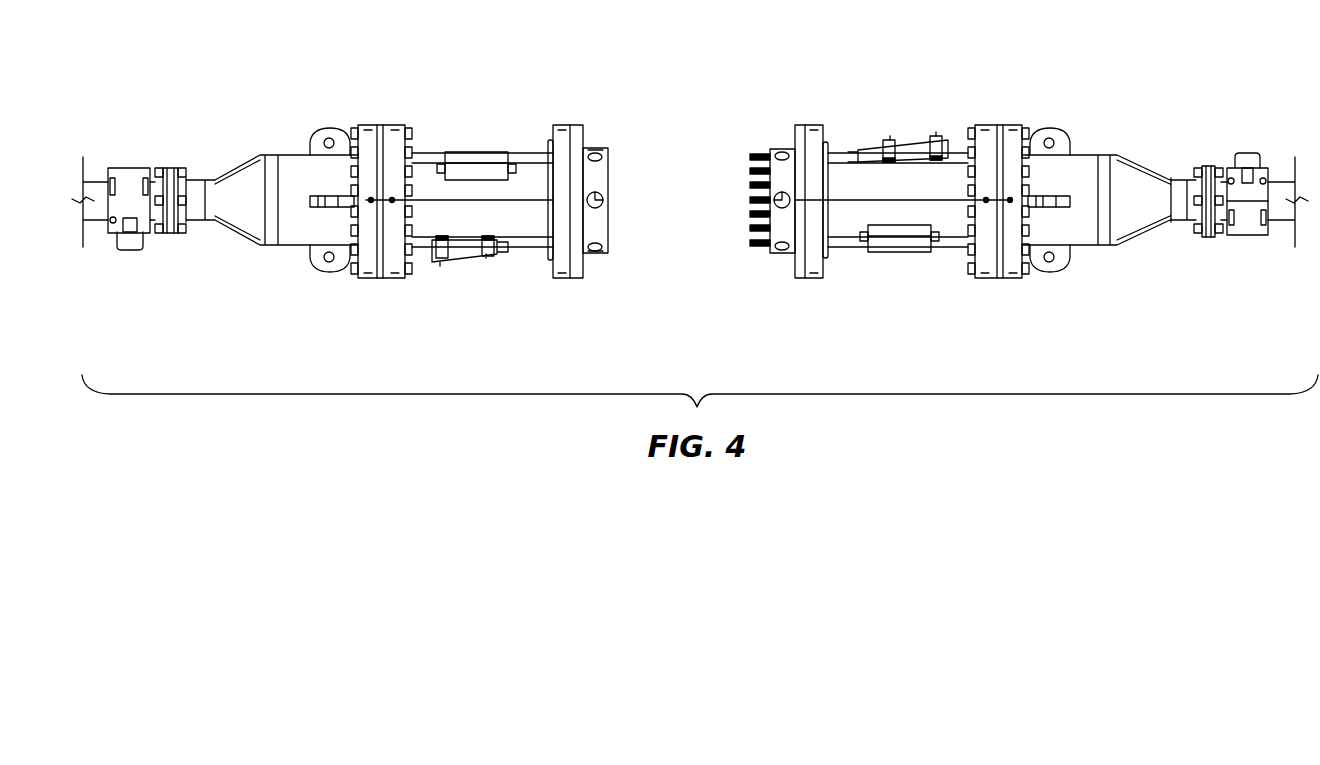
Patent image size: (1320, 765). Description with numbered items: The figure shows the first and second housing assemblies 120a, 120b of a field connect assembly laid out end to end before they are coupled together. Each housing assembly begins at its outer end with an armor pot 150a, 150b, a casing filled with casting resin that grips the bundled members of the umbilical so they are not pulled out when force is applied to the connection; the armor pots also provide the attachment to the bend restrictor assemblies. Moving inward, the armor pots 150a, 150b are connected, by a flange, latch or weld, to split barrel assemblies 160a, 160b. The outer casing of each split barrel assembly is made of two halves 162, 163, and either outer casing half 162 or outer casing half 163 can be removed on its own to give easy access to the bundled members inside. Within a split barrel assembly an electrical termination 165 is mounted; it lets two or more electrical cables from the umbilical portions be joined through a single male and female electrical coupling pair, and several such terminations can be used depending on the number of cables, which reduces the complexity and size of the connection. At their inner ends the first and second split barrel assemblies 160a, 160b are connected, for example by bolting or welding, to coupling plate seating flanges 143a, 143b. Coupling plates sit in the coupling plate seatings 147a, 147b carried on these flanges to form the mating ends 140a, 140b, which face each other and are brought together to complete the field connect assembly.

The first housing assembly 120a is at (392, 84).
The second housing assembly 120b is at (1118, 105).
The first mating end 140a is at (606, 175).
The second mating end 140b is at (766, 150).
The first coupling plate seating flange 143a is at (575, 126).
The second coupling plate seating flange 143b is at (797, 125).
The first coupling plate seating 147a is at (600, 256).
The second coupling plate seating 147b is at (778, 255).
The first armor pot 150a is at (288, 243).
The second armor pot 150b is at (1085, 242).
The first split barrel assembly 160a is at (508, 218).
The second split barrel assembly 160b is at (848, 223).
The outer casing half 162 is at (528, 162).
The outer casing half 163 is at (520, 235).
The electrical termination 165 is at (455, 253).